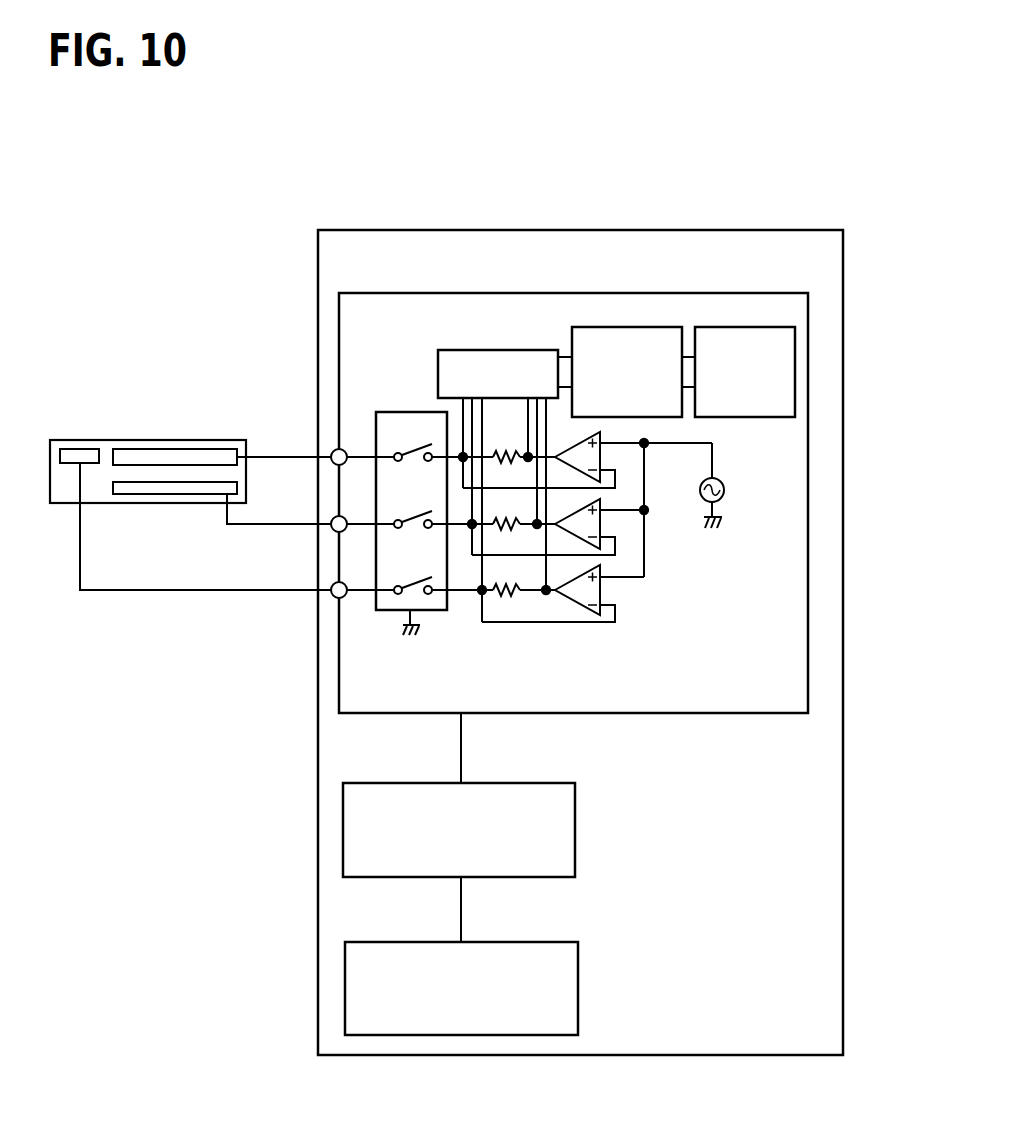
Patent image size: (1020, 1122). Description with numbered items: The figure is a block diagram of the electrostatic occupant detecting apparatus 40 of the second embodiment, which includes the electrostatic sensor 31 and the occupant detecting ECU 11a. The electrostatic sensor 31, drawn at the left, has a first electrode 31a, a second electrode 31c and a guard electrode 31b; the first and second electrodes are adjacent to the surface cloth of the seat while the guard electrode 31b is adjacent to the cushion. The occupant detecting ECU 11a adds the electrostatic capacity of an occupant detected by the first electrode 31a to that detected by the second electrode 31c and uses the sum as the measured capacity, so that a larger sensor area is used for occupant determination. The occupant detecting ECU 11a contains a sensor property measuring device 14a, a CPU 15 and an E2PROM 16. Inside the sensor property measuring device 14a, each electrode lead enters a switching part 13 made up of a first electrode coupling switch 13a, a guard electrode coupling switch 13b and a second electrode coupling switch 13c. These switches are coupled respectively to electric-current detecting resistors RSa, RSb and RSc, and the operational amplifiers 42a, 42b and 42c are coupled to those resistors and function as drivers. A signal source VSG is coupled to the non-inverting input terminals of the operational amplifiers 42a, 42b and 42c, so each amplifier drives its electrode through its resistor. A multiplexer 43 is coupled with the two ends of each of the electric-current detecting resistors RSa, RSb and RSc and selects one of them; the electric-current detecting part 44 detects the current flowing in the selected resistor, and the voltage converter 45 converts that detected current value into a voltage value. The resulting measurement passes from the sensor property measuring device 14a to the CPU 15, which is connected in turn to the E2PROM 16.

The electrostatic occupant detecting apparatus 40 is at (488, 162).
The occupant detecting ECU 11a is at (368, 231).
The sensor property measuring device 14a is at (592, 294).
The multiplexer 43 is at (490, 350).
The electric-current detecting part 44 is at (608, 330).
The voltage converter 45 is at (726, 330).
The operational amplifier 42a is at (572, 452).
The operational amplifier 42b is at (572, 519).
The operational amplifier 42c is at (572, 585).
The electric-current detecting resistor RSa is at (500, 455).
The electric-current detecting resistor RSb is at (500, 522).
The electric-current detecting resistor RSc is at (500, 588).
The signal source VSG is at (726, 476).
The switching part 13 is at (392, 612).
The first electrode coupling switch 13a is at (410, 452).
The guard electrode coupling switch 13b is at (410, 519).
The second electrode coupling switch 13c is at (410, 585).
The electrostatic sensor 31 is at (60, 440).
The first electrode 31a is at (142, 450).
The guard electrode 31b is at (128, 495).
The second electrode 31c is at (70, 450).
The CPU 15 is at (575, 830).
The E2PROM 16 is at (578, 986).